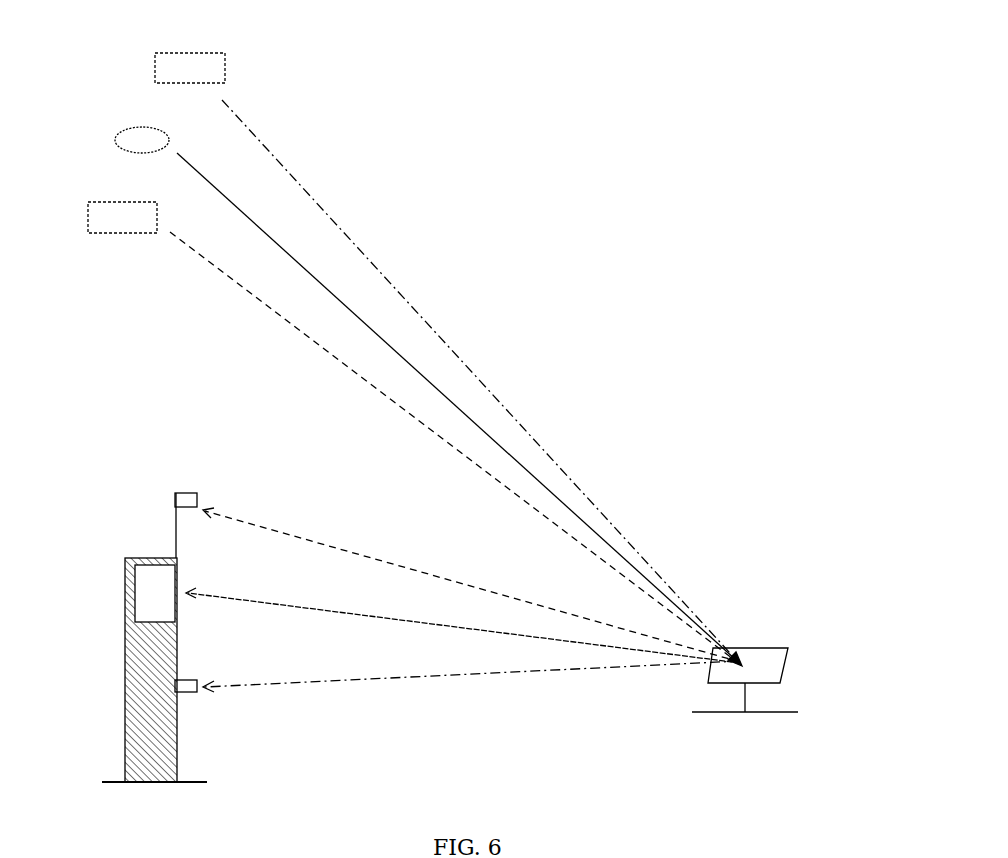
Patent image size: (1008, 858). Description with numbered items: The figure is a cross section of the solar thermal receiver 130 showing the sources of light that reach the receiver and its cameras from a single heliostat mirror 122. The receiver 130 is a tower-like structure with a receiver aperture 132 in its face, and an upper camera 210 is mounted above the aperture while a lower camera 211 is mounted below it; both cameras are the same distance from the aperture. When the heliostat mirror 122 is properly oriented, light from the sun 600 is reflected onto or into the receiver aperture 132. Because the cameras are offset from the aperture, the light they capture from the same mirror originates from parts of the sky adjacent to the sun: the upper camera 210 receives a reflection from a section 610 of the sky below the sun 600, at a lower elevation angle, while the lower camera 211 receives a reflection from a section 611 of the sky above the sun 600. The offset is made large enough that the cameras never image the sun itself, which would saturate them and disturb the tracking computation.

The sun 600 is at (140, 125).
The section of the sky below the sun 610 is at (122, 202).
The section of the sky above the sun 611 is at (197, 53).
The heliostat mirror 122 is at (782, 675).
The solar thermal receiver 130 is at (125, 713).
The receiver aperture 132 is at (143, 606).
The upper camera 210 is at (175, 500).
The lower camera 211 is at (187, 692).